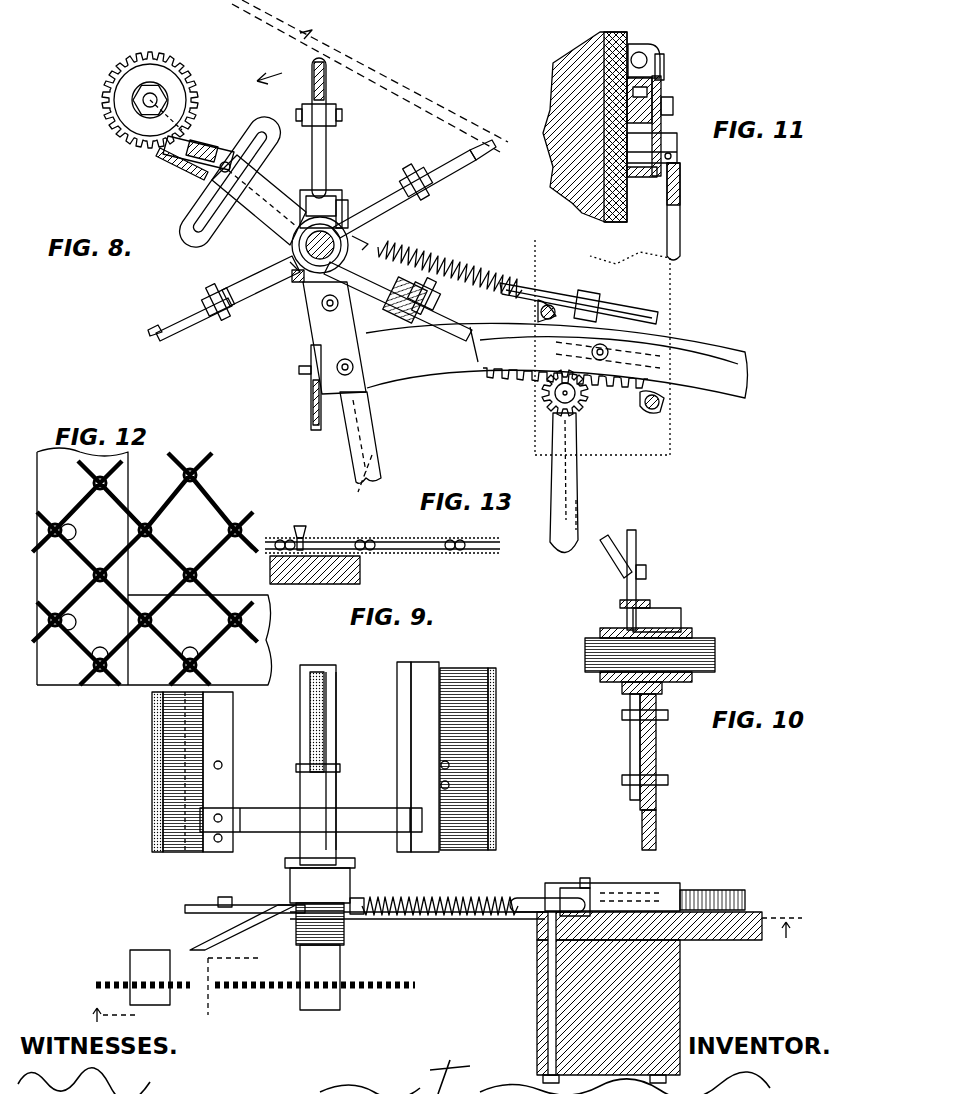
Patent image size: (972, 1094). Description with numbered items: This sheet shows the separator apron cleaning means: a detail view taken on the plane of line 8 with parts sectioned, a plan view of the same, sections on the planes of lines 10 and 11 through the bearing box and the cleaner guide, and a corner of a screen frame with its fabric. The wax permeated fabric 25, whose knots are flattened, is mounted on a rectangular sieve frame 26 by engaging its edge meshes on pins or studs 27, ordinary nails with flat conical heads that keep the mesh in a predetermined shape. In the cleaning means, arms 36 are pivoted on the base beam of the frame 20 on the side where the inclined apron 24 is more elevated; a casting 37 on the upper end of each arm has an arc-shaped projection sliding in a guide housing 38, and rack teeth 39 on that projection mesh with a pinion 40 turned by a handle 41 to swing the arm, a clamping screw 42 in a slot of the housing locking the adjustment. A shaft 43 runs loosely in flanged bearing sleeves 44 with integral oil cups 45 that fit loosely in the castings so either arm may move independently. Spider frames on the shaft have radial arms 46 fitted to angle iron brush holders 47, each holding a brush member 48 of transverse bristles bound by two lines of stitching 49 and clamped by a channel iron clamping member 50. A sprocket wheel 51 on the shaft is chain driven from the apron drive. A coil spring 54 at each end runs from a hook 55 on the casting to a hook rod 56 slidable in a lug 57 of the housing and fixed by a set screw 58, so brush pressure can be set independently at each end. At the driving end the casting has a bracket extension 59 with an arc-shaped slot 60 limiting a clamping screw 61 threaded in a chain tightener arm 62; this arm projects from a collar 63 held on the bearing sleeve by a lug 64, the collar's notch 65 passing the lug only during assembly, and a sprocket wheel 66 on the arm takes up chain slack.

In FIG. 9, the section line 8— 8 is at (448, 972).
In FIG. 8, the section line 10— 10 is at (356, 160).
In FIG. 8, the section line 11— 11 is at (640, 278).
In FIG. 9, the frame 20 is at (682, 992).
In FIG. 8, the inclined apron 24 is at (352, 72).
In FIG. 12, the wax permeated fabric 25 is at (214, 512).
In FIG. 13, the wax permeated fabric 25 is at (396, 542).
In FIG. 12, the sieve frame 26 is at (52, 500).
In FIG. 12, the pins or studs 27 is at (78, 532).
In FIG. 13, the pins or studs 27 is at (300, 526).
In FIG. 8, the arm 36 is at (372, 454).
In FIG. 10, the arm 36 is at (658, 826).
In FIG. 8, the casting 37 is at (412, 366).
In FIG. 11, the casting 37 is at (666, 130).
In FIG. 10, the casting 37 is at (636, 752).
In FIG. 9, the casting 37 is at (520, 896).
In FIG. 8, the guide housing 38 is at (660, 334).
In FIG. 11, the guide housing 38 is at (666, 92).
In FIG. 9, the guide housing 38 is at (640, 882).
In FIG. 8, the rack teeth 39 is at (506, 380).
In FIG. 11, the rack teeth 39 is at (680, 146).
In FIG. 9, the rack teeth 39 is at (712, 900).
In FIG. 8, the pinion 40 is at (586, 404).
In FIG. 11, the pinion 40 is at (644, 180).
In FIG. 8, the handle 41 is at (550, 496).
In FIG. 11, the handle 41 is at (682, 212).
In FIG. 8, the clamping screw 42 is at (666, 352).
In FIG. 11, the clamping screw 42 is at (678, 106).
In FIG. 8, the shaft 43 is at (286, 290).
In FIG. 9, the shaft 43 is at (338, 716).
In FIG. 8, the flanged bearing sleeve 44 is at (348, 214).
In FIG. 10, the flanged bearing sleeve 44 is at (664, 686).
In FIG. 9, the flanged bearing sleeve 44 is at (355, 862).
In FIG. 10, the oil cup 45 is at (668, 614).
In FIG. 8, the radial arm 46 is at (330, 194).
In FIG. 9, the radial arm 46 is at (360, 816).
In FIG. 8, the brush holder 47 is at (420, 192).
In FIG. 9, the brush holder 47 is at (206, 748).
In FIG. 8, the brush member 48 is at (474, 160).
In FIG. 9, the brush member 48 is at (152, 792).
In FIG. 8, the lines of stitching 49 is at (424, 170).
In FIG. 9, the lines of stitching 49 is at (478, 790).
In FIG. 8, the channel iron clamping member 50 is at (304, 116).
In FIG. 9, the channel iron clamping member 50 is at (310, 756).
In FIG. 9, the sprocket wheel 51 is at (370, 986).
In FIG. 8, the coil spring 54 is at (468, 268).
In FIG. 9, the coil spring 54 is at (440, 916).
In FIG. 8, the hook 55 is at (372, 244).
In FIG. 9, the hook 55 is at (360, 914).
In FIG. 8, the hook rod 56 is at (540, 288).
In FIG. 11, the hook rod 56 is at (650, 58).
In FIG. 9, the hook rod 56 is at (522, 896).
In FIG. 8, the lug 57 is at (588, 296).
In FIG. 11, the lug 57 is at (638, 44).
In FIG. 9, the lug 57 is at (594, 896).
In FIG. 11, the set screw 58 is at (668, 62).
In FIG. 9, the set screw 58 is at (586, 878).
In FIG. 8, the bracket extension 59 is at (250, 215).
In FIG. 10, the bracket extension 59 is at (640, 536).
In FIG. 9, the bracket extension 59 is at (185, 906).
In FIG. 8, the arc-shaped slot 60 is at (196, 232).
In FIG. 8, the clamping screw 61 is at (240, 166).
In FIG. 10, the clamping screw 61 is at (648, 572).
In FIG. 9, the clamping screw 61 is at (222, 896).
In FIG. 8, the chain tightener arm 62 is at (200, 142).
In FIG. 10, the chain tightener arm 62 is at (612, 558).
In FIG. 9, the chain tightener arm 62 is at (172, 936).
In FIG. 8, the collar 63 is at (296, 286).
In FIG. 10, the collar 63 is at (628, 692).
In FIG. 8, the lug 64 is at (358, 290).
In FIG. 8, the notch 65 is at (294, 250).
In FIG. 8, the sprocket wheel 66 is at (138, 60).
In FIG. 9, the sprocket wheel 66 is at (118, 974).